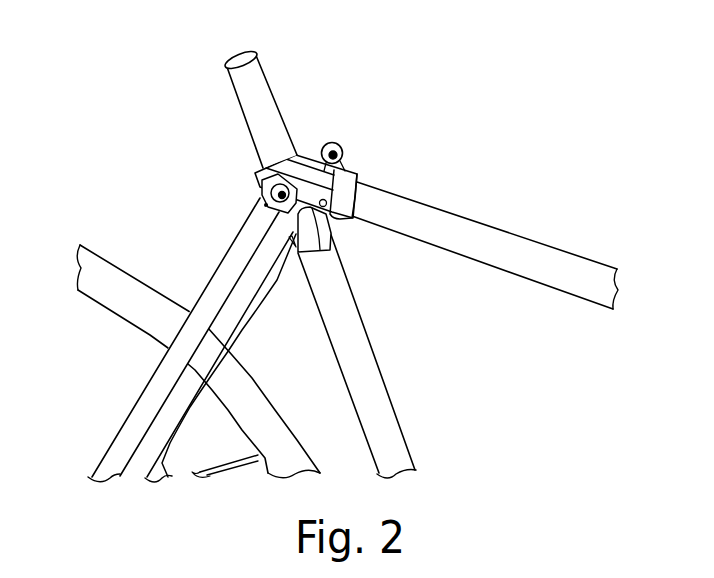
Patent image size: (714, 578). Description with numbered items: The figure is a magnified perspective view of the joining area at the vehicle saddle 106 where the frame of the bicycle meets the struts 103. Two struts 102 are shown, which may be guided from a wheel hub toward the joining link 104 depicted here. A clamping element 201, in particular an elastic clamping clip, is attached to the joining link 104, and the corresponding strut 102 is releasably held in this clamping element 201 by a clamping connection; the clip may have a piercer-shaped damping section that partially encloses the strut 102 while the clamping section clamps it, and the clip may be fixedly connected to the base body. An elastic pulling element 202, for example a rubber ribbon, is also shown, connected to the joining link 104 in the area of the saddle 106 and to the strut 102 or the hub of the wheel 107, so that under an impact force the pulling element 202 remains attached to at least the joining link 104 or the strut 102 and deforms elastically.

The strut 102 is at (236, 257).
The struts 103 is at (503, 250).
The joining link 104 is at (342, 166).
The vehicle saddle 106 is at (266, 116).
The wheel 107 is at (108, 268).
The clamping element 201 is at (258, 198).
The elastic pulling element 202 is at (250, 341).